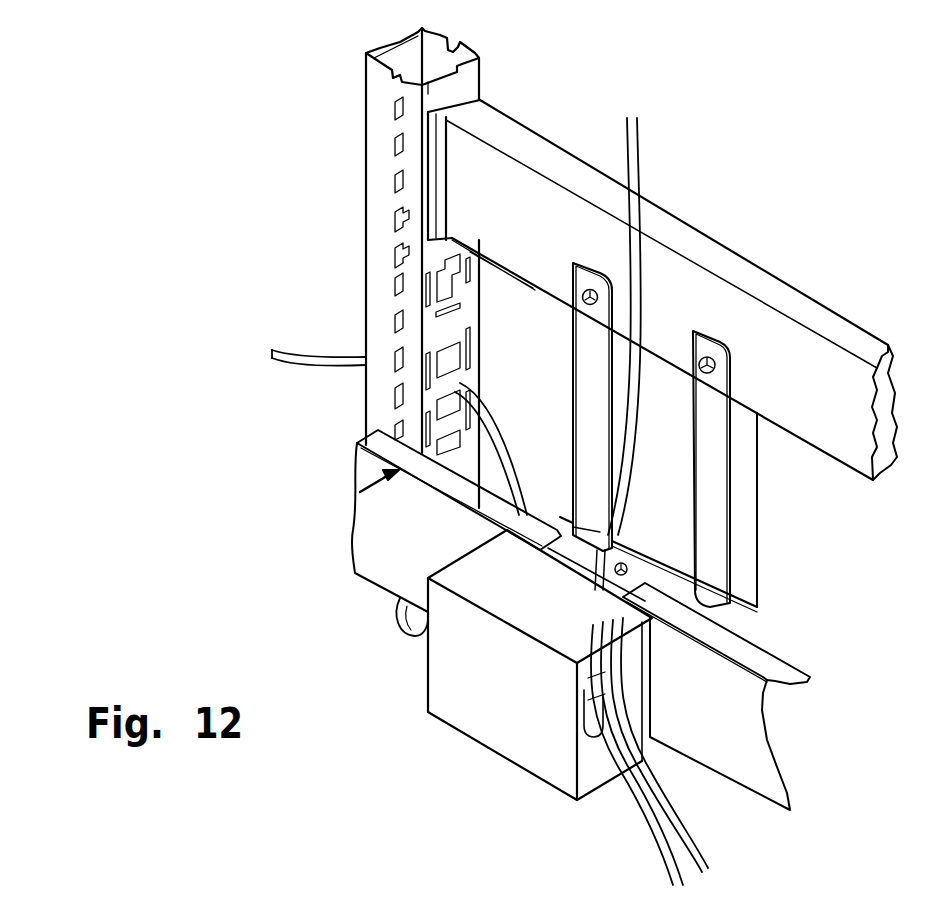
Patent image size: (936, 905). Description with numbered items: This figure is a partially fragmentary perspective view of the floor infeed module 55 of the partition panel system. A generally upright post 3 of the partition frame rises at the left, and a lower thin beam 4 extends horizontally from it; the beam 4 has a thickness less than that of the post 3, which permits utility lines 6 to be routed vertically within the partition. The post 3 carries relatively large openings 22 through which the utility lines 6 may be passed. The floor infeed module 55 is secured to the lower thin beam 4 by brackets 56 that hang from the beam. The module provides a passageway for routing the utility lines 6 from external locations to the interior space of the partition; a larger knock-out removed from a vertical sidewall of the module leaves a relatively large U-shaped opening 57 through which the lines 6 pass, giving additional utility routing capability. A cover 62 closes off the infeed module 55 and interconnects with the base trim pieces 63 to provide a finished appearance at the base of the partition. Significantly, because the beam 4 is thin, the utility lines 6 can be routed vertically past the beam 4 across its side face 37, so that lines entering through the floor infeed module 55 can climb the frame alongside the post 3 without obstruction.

The upright post 3 is at (366, 197).
The beam 4 is at (703, 228).
The utility lines 6 is at (318, 358).
The openings 22 is at (462, 384).
The side face 37 is at (813, 423).
The floor infeed module 55 is at (392, 721).
The brackets 56 is at (758, 505).
The U-shaped opening 57 is at (600, 727).
The cover 62 is at (510, 710).
The base trim pieces 63 is at (392, 532).